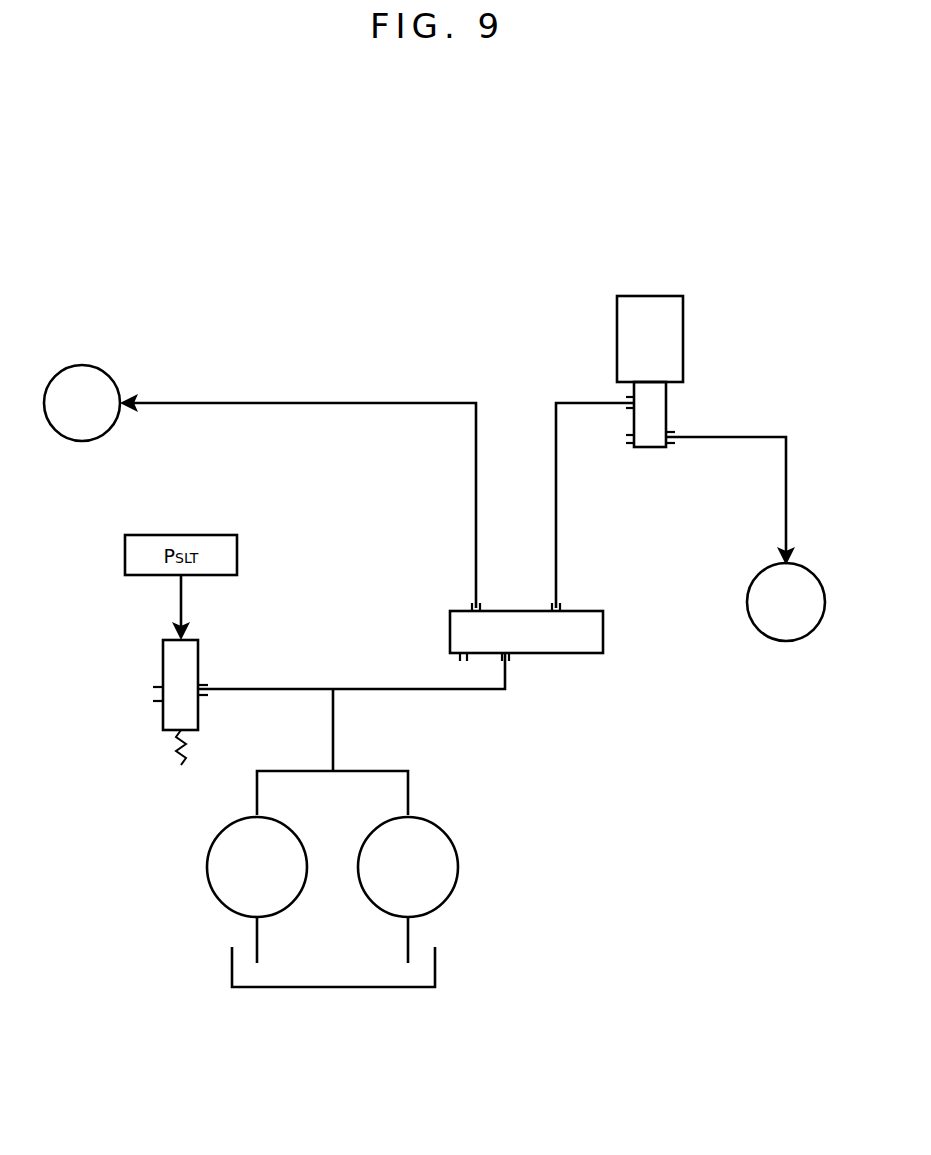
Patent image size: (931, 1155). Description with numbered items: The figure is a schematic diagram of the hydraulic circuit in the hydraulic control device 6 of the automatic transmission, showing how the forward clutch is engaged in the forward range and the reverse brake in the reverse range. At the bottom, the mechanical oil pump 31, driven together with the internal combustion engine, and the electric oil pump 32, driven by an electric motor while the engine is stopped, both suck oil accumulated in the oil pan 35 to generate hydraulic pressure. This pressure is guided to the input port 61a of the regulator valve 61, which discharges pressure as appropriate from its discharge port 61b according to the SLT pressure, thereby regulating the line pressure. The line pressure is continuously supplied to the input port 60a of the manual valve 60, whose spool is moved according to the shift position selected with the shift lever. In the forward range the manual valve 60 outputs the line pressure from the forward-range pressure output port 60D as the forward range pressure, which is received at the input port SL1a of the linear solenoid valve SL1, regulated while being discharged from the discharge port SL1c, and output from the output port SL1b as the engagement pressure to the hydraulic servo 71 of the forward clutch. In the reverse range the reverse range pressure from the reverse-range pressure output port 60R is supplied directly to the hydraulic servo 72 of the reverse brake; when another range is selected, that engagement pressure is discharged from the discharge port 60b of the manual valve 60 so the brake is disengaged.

The hydraulic control device 6 is at (372, 265).
The mechanical oil pump 31 is at (292, 830).
The electric oil pump 32 is at (445, 830).
The oil pan 35 is at (437, 968).
The manual valve 60 is at (575, 657).
The input port 60a is at (509, 662).
The discharge port 60b is at (458, 662).
The reverse-range pressure output port 60R is at (480, 606).
The forward-range pressure output port 60D is at (560, 606).
The regulator valve 61 is at (204, 650).
The input port 61a is at (210, 690).
The discharge port 61b is at (155, 694).
The hydraulic servo 71 is at (798, 565).
The hydraulic servo 72 is at (90, 366).
The linear solenoid valve SL1 is at (655, 290).
The input port SL1a is at (626, 398).
The output port SL1b is at (675, 434).
The discharge port SL1c is at (626, 438).